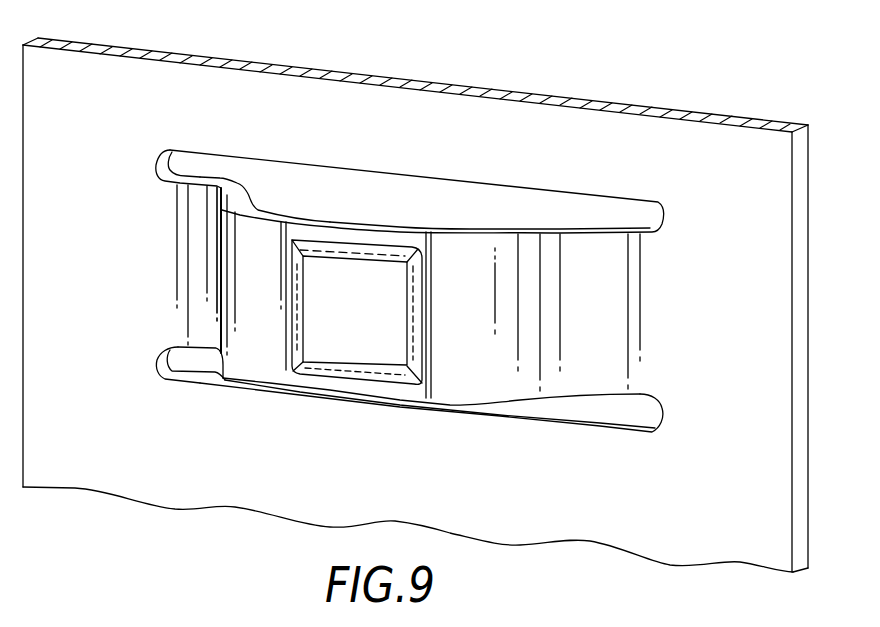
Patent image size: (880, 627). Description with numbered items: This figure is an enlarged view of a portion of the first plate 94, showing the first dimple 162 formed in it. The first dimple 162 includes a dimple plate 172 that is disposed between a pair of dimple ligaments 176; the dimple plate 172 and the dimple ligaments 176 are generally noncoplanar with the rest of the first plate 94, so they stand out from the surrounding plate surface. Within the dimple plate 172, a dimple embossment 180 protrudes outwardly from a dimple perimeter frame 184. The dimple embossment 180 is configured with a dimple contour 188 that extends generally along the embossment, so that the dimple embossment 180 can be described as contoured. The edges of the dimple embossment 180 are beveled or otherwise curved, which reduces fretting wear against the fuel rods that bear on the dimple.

The first plate 94 is at (812, 180).
The first dimple 162 is at (472, 229).
The dimple plate 172 is at (370, 216).
The dimple ligaments 176 is at (220, 186).
The dimple contour 188 is at (313, 254).
The dimple embossment 180 is at (332, 376).
The dimple perimeter frame 184 is at (358, 396).